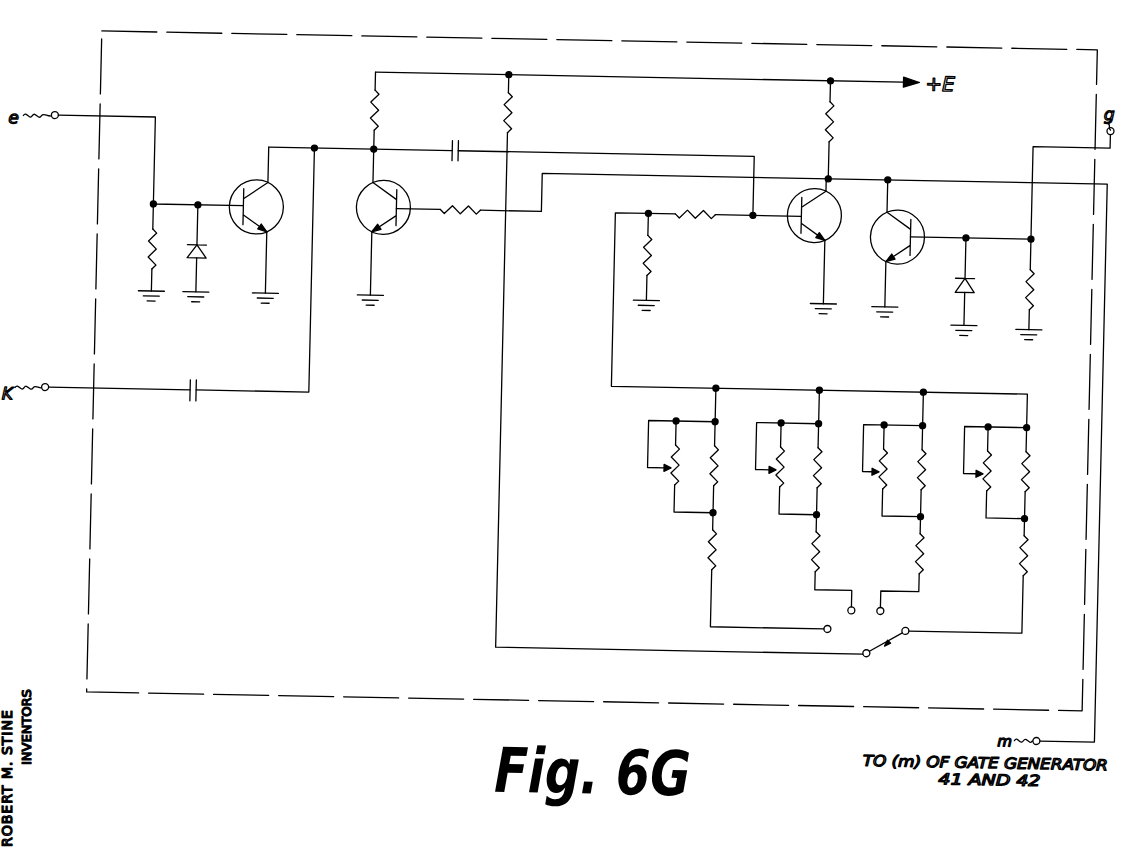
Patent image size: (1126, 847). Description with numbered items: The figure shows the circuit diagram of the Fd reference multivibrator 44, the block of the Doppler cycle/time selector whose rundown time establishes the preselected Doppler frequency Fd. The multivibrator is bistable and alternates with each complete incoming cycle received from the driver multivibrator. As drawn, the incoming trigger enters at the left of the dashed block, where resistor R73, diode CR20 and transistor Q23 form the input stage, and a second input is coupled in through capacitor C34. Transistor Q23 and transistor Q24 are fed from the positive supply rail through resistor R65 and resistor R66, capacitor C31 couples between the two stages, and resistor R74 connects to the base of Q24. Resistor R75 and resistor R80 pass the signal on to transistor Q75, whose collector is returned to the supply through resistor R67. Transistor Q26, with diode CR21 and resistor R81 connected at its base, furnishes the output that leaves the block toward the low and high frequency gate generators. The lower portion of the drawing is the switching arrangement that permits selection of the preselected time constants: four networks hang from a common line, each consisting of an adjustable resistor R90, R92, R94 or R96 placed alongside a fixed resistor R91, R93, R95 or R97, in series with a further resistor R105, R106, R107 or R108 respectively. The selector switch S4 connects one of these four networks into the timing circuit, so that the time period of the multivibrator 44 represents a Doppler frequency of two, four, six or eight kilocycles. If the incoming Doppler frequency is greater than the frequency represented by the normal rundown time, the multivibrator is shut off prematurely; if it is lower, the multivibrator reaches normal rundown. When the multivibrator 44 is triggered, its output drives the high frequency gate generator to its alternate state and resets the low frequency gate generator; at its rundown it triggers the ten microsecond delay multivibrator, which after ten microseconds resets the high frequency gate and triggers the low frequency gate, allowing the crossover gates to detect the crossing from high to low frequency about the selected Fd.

The Fd reference multivibrator 44 is at (311, 691).
The resistor 3.3K R73 is at (134, 252).
The diode 1N914 CR20 is at (218, 254).
The transistor 2N377 Q23 is at (238, 224).
The capacitor 150 pF C34 is at (195, 395).
The resistor 750 ohm R65 is at (346, 110).
The transistor 2N377 Q24 is at (377, 227).
The capacitor .015 MF C31 is at (449, 129).
The resistor 2K R66 is at (684, 365).
The resistor 5.1K R74 is at (459, 212).
The resistor 5.1K R75 is at (723, 219).
The resistor 180K R80 is at (665, 262).
The resistor 3.9K R67 is at (851, 130).
The transistor 2N377 Q75 is at (793, 245).
The transistor 2N377 Q26 is at (952, 250).
The diode 1N914 CR21 is at (941, 286).
The resistor 3.3K R81 is at (1046, 290).
The potentiometer 30K R90 is at (681, 465).
The resistor 10K R91 is at (730, 459).
The resistor 36K R105 is at (766, 579).
The potentiometer 30K R92 is at (787, 467).
The resistor 3.9K R93 is at (834, 461).
The resistor 15K R106 is at (837, 569).
The potentiometer 30K R94 is at (892, 469).
The resistor 2K R95 is at (937, 463).
The resistor 7.5K R107 is at (924, 571).
The potentiometer 30K R96 is at (995, 471).
The resistor 2.7K R97 is at (1045, 481).
The resistor 3.3K R108 is at (990, 584).
The positioning switch S4 is at (866, 645).